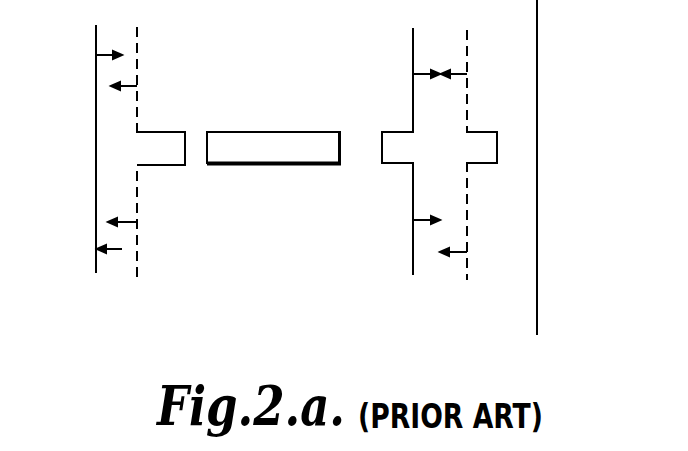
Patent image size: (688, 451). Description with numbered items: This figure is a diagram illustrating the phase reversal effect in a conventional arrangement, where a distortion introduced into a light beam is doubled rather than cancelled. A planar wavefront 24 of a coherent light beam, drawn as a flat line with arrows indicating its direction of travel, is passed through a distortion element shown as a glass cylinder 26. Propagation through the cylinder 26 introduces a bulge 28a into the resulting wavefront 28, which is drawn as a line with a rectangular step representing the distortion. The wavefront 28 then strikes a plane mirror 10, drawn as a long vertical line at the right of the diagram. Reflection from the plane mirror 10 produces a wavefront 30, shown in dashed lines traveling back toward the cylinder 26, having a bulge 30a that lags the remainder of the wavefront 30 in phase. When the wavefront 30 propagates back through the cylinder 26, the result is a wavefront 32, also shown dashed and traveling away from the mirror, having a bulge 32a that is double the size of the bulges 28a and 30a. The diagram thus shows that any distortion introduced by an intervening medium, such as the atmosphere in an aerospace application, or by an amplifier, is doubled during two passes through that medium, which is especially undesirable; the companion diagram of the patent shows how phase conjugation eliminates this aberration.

The plane mirror 10 is at (557, 100).
The planar wavefront 24 is at (96, 75).
The glass cylinder 26 is at (293, 132).
The wavefront 28 is at (413, 60).
The bulge 28a is at (395, 165).
The wavefront 30 is at (467, 48).
The bulge 30a is at (488, 165).
The wavefront 32 is at (137, 63).
The bulge 32a is at (163, 166).